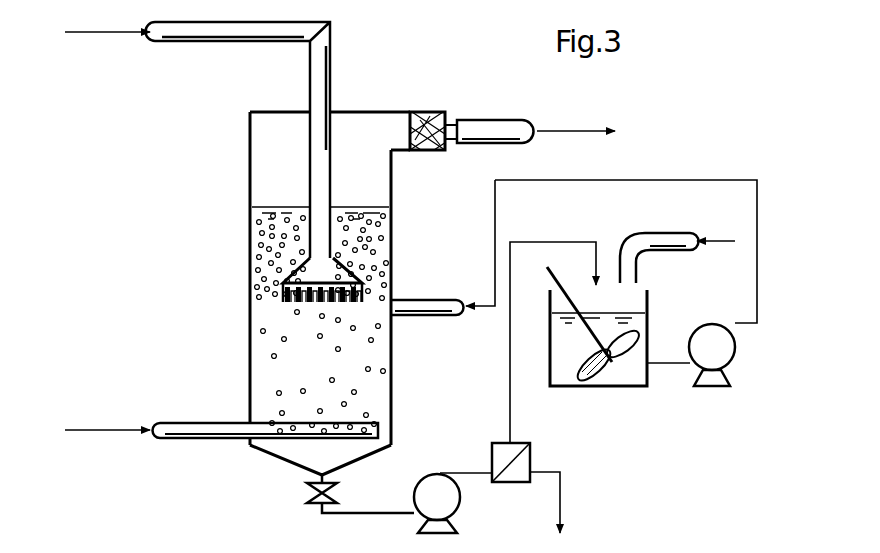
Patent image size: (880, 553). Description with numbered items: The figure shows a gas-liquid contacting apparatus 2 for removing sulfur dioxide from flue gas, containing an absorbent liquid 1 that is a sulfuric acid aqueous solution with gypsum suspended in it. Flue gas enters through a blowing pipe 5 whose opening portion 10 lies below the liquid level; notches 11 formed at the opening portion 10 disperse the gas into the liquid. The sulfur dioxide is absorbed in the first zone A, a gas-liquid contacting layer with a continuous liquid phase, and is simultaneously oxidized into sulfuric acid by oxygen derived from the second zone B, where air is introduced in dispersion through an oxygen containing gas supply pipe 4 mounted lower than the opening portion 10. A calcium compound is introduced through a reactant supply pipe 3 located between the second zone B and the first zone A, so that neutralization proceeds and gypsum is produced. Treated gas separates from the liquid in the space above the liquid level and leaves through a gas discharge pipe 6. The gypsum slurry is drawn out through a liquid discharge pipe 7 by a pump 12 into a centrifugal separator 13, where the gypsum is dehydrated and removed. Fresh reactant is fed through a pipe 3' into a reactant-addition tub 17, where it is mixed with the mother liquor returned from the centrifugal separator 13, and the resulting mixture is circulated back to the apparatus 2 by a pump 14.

The absorbent liquid 1 is at (332, 363).
The gas-liquid contacting apparatus 2 is at (250, 152).
The reactant supply pipe 3 is at (574, 251).
The pipe 3' is at (677, 238).
The oxygen containing gas supply pipe 4 is at (187, 423).
The flue gas blowing pipe 5 is at (195, 43).
The gas discharge pipe 6 is at (495, 120).
The liquid discharge pipe 7 is at (318, 477).
The opening portion 10 is at (320, 292).
The notches 11 is at (312, 305).
The pump 12 is at (429, 475).
The centrifugal separator 13 is at (532, 461).
The pump 14 is at (700, 326).
The reactant-addition tub 17 is at (618, 387).
The first zone A is at (283, 237).
The second zone B is at (283, 371).